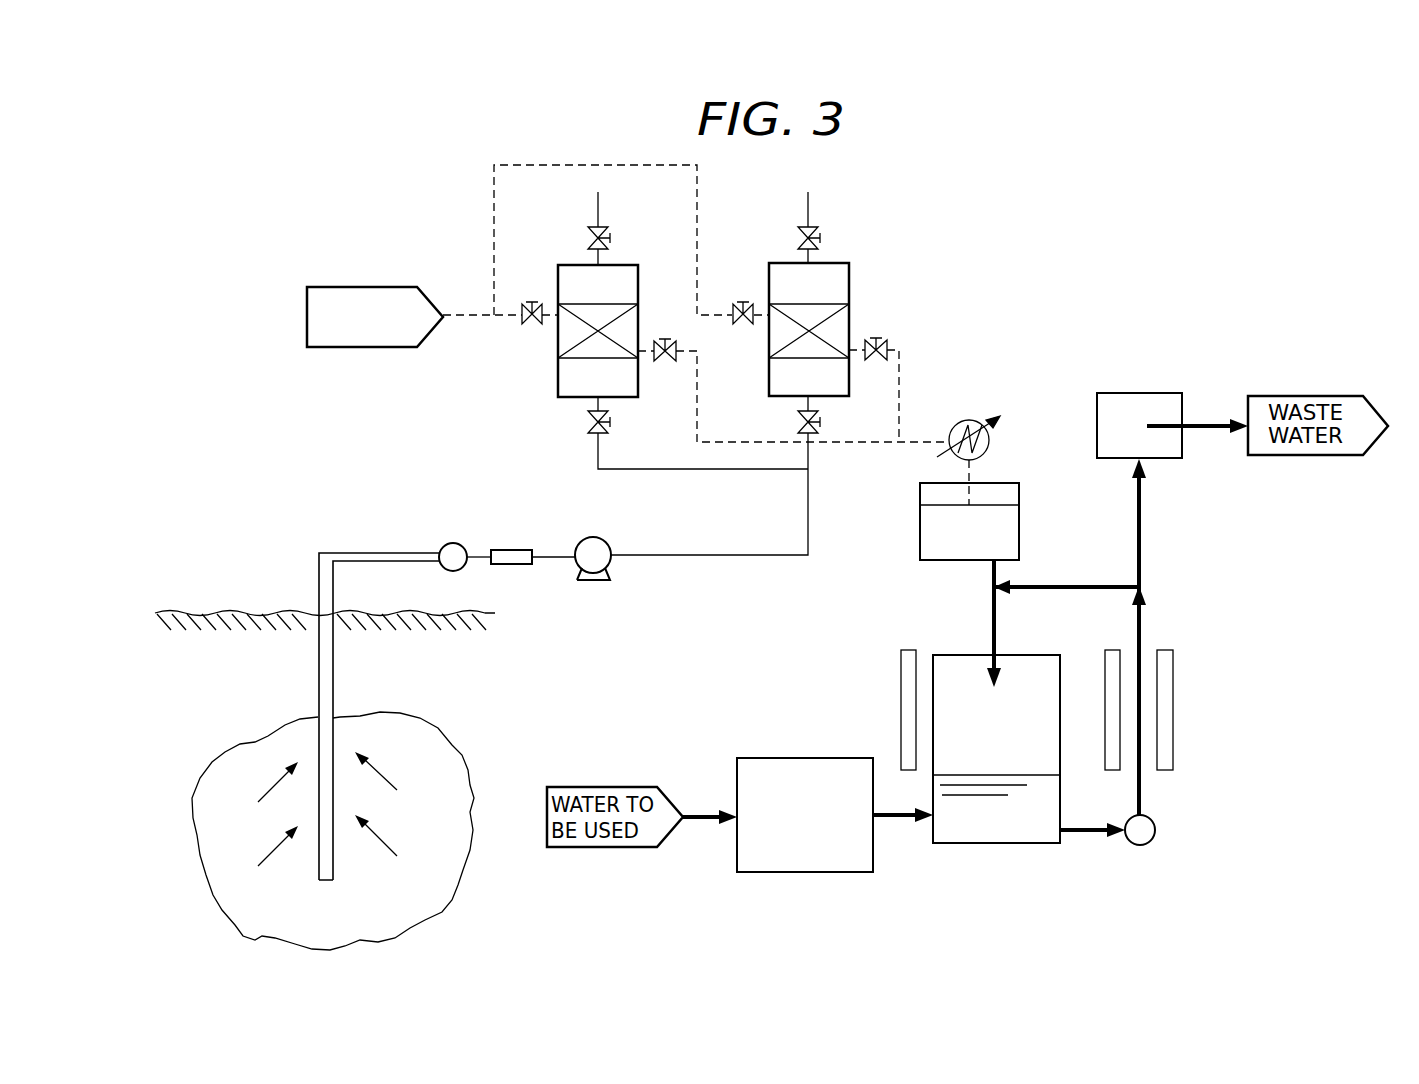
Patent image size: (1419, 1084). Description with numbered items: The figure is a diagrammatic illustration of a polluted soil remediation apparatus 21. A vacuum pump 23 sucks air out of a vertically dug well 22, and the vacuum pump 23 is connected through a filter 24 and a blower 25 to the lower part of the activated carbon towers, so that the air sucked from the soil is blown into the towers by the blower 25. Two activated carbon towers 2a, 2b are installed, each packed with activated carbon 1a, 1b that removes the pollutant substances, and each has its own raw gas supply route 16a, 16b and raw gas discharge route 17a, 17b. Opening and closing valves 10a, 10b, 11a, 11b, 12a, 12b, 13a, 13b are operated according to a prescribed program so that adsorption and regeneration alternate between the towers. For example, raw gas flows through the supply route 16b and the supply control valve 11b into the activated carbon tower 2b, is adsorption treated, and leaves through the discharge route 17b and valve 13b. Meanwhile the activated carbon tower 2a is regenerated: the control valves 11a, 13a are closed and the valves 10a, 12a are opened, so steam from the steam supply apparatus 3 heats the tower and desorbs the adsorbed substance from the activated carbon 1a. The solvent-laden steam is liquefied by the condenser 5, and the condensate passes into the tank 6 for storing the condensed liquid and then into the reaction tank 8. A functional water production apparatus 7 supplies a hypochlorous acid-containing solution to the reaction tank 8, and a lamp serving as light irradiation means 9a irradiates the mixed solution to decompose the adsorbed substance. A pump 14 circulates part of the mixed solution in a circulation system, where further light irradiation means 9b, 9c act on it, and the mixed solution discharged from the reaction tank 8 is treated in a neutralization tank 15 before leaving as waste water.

The activated carbon 1a is at (632, 318).
The activated carbon 1b is at (843, 318).
The activated carbon tower 2a is at (630, 281).
The activated carbon tower 2b is at (841, 281).
The steam supply apparatus 3 is at (380, 286).
The condenser 5 is at (972, 420).
The tank for storing the condensed liquid 6 is at (942, 563).
The functional water production apparatus 7 is at (822, 757).
The reaction tank 8 is at (968, 846).
The light irradiation means 9a is at (898, 680).
The light irradiation means 9b is at (1110, 773).
The light irradiation means 9c is at (1165, 773).
The opening and closing valve 10a is at (531, 326).
The opening and closing valve 10b is at (742, 326).
The supply control valve 11a is at (588, 423).
The supply control valve 11b is at (798, 423).
The opening and closing valve 12a is at (664, 362).
The opening and closing valve 12b is at (875, 361).
The control valve 13a is at (612, 241).
The control valve 13b is at (822, 241).
The pump 14 is at (1140, 848).
The neutralization tank 15 is at (1147, 392).
The raw gas supply route 16a is at (677, 468).
The raw gas supply route 16b is at (808, 452).
The raw gas discharge route 17a is at (598, 212).
The raw gas discharge route 17b is at (808, 212).
The polluted soil remediation apparatus 21 is at (1070, 270).
The vertical well 22 is at (333, 678).
The vacuum pump 23 is at (457, 543).
The filter 24 is at (518, 548).
The blower 25 is at (600, 536).